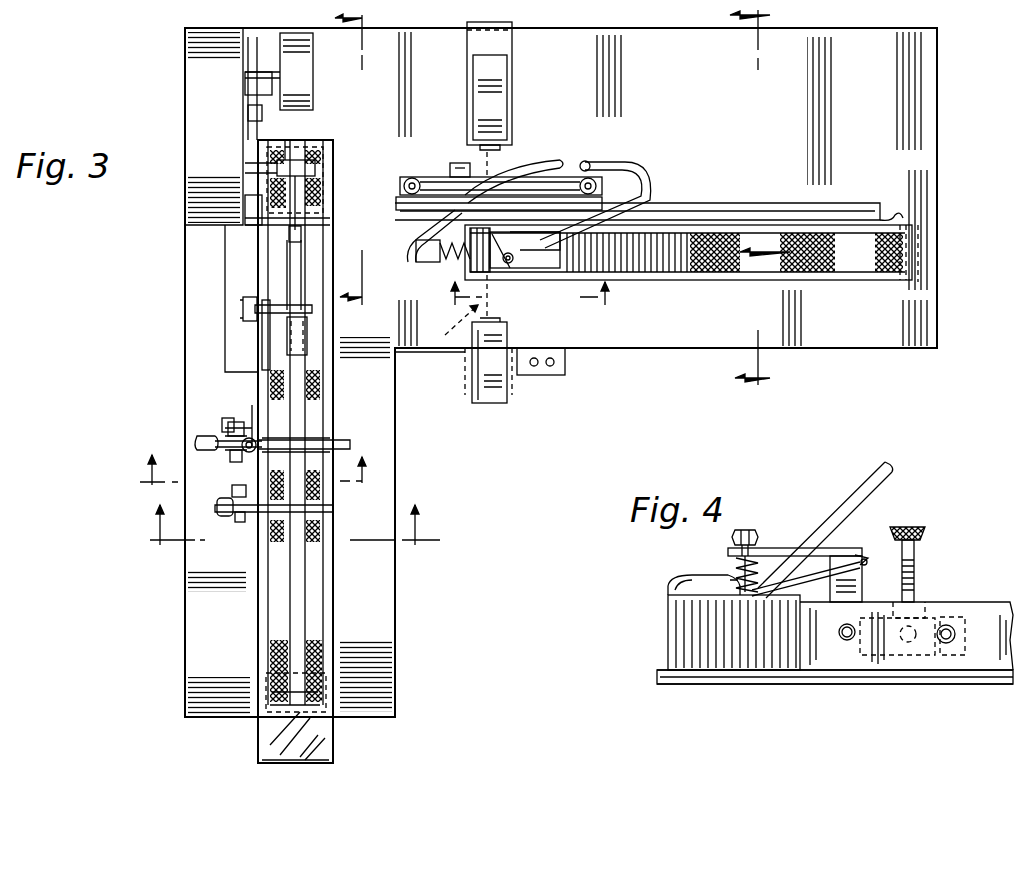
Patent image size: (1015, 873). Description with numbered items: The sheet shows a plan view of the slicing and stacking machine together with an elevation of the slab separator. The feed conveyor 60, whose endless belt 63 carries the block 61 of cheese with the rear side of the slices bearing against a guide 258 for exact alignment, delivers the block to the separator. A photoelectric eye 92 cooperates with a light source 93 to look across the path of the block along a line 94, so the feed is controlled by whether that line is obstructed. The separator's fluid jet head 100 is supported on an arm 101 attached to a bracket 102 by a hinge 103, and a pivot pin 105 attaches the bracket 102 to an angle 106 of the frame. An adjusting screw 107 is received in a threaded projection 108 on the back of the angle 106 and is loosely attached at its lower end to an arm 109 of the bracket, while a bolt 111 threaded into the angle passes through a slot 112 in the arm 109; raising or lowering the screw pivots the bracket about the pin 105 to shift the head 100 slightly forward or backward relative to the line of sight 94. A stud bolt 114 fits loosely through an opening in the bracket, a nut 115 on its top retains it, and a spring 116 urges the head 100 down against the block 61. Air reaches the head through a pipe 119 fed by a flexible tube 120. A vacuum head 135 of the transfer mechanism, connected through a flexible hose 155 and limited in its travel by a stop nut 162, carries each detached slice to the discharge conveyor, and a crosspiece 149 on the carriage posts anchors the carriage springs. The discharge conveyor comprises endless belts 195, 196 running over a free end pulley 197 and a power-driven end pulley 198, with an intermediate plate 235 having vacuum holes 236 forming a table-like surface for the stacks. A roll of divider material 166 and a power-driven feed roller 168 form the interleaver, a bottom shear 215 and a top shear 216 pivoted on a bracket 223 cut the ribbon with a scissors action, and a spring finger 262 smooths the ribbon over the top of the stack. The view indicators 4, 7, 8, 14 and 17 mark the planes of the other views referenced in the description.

In FIG. 3, the section line 4- 4 is at (528, 297).
In FIG. 3, the section line 7- 7 is at (756, 196).
In FIG. 3, the section line 8- 8 is at (280, 525).
In FIG. 3, the section line 14- 14 is at (363, 158).
In FIG. 3, the section line 17- 17 is at (254, 470).
In FIG. 3, the feed conveyor 60 is at (713, 264).
In FIG. 3, the block 61 is at (640, 265).
In FIG. 4, the block 61 is at (705, 637).
In FIG. 3, the endless belt 63 is at (835, 270).
In FIG. 4, the endless belt 63 is at (815, 668).
In FIG. 3, the photoelectric eye 92 is at (495, 100).
In FIG. 3, the light source 93 is at (490, 385).
In FIG. 3, the line 94 is at (455, 309).
In FIG. 4, the fluid jet head 100 is at (880, 575).
In FIG. 4, the arm 101 is at (800, 548).
In FIG. 4, the bracket 102 is at (864, 557).
In FIG. 4, the hinge 103 is at (866, 560).
In FIG. 4, the pivot pin 105 is at (847, 642).
In FIG. 3, the angle 106 is at (720, 212).
In FIG. 4, the angle 106 is at (950, 602).
In FIG. 4, the adjusting screw 107 is at (916, 560).
In FIG. 4, the threaded projection 108 is at (922, 604).
In FIG. 4, the arm 109 is at (925, 656).
In FIG. 4, the bolt 111 is at (956, 636).
In FIG. 4, the slot 112 is at (958, 618).
In FIG. 4, the stud bolt 114 is at (736, 538).
In FIG. 4, the nut 115 is at (752, 530).
In FIG. 4, the spring 116 is at (736, 566).
In FIG. 3, the pipe 119 is at (548, 270).
In FIG. 4, the pipe 119 is at (868, 492).
In FIG. 3, the flexible tube 120 is at (637, 162).
In FIG. 3, the vacuum head 135 is at (463, 270).
In FIG. 3, the crosspiece 149 is at (432, 178).
In FIG. 3, the flexible hose 155 is at (520, 163).
In FIG. 3, the stop nut 162 is at (500, 272).
In FIG. 4, the stop nut 162 is at (670, 574).
In FIG. 3, the roll of divider material 166 is at (313, 95).
In FIG. 3, the feed roller 168 is at (295, 160).
In FIG. 3, the endless belt 195 is at (313, 603).
In FIG. 3, the endless belt 196 is at (275, 598).
In FIG. 3, the end pulley 197 is at (340, 715).
In FIG. 3, the end pulley 198 is at (333, 167).
In FIG. 3, the bottom shear 215 is at (336, 440).
In FIG. 3, the top shear 216 is at (200, 436).
In FIG. 3, the bracket 223 is at (255, 425).
In FIG. 3, the intermediate plate 235 is at (288, 250).
In FIG. 3, the holes 236 is at (301, 236).
In FIG. 3, the guide 258 is at (897, 218).
In FIG. 3, the spring finger 262 is at (287, 338).